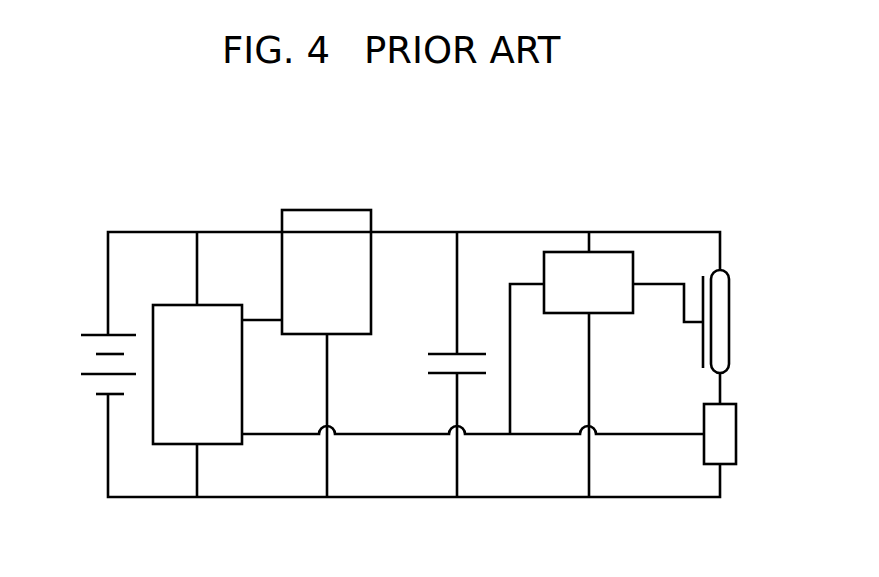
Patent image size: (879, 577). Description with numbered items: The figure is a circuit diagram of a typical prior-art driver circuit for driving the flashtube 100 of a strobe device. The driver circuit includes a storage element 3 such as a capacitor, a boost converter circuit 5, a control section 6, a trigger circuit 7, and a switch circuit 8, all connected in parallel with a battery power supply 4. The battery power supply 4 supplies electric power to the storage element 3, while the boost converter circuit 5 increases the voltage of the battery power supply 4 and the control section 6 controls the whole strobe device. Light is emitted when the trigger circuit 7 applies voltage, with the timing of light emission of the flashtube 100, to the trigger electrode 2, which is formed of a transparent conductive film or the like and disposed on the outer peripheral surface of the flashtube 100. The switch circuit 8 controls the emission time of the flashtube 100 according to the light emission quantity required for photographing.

The trigger electrode 2 is at (702, 290).
The storage element 3 is at (443, 354).
The battery power supply 4 is at (83, 367).
The boost converter circuit 5 is at (337, 210).
The control section 6 is at (215, 447).
The trigger circuit 7 is at (568, 252).
The switch circuit 8 is at (736, 430).
The flashtube 100 is at (725, 265).